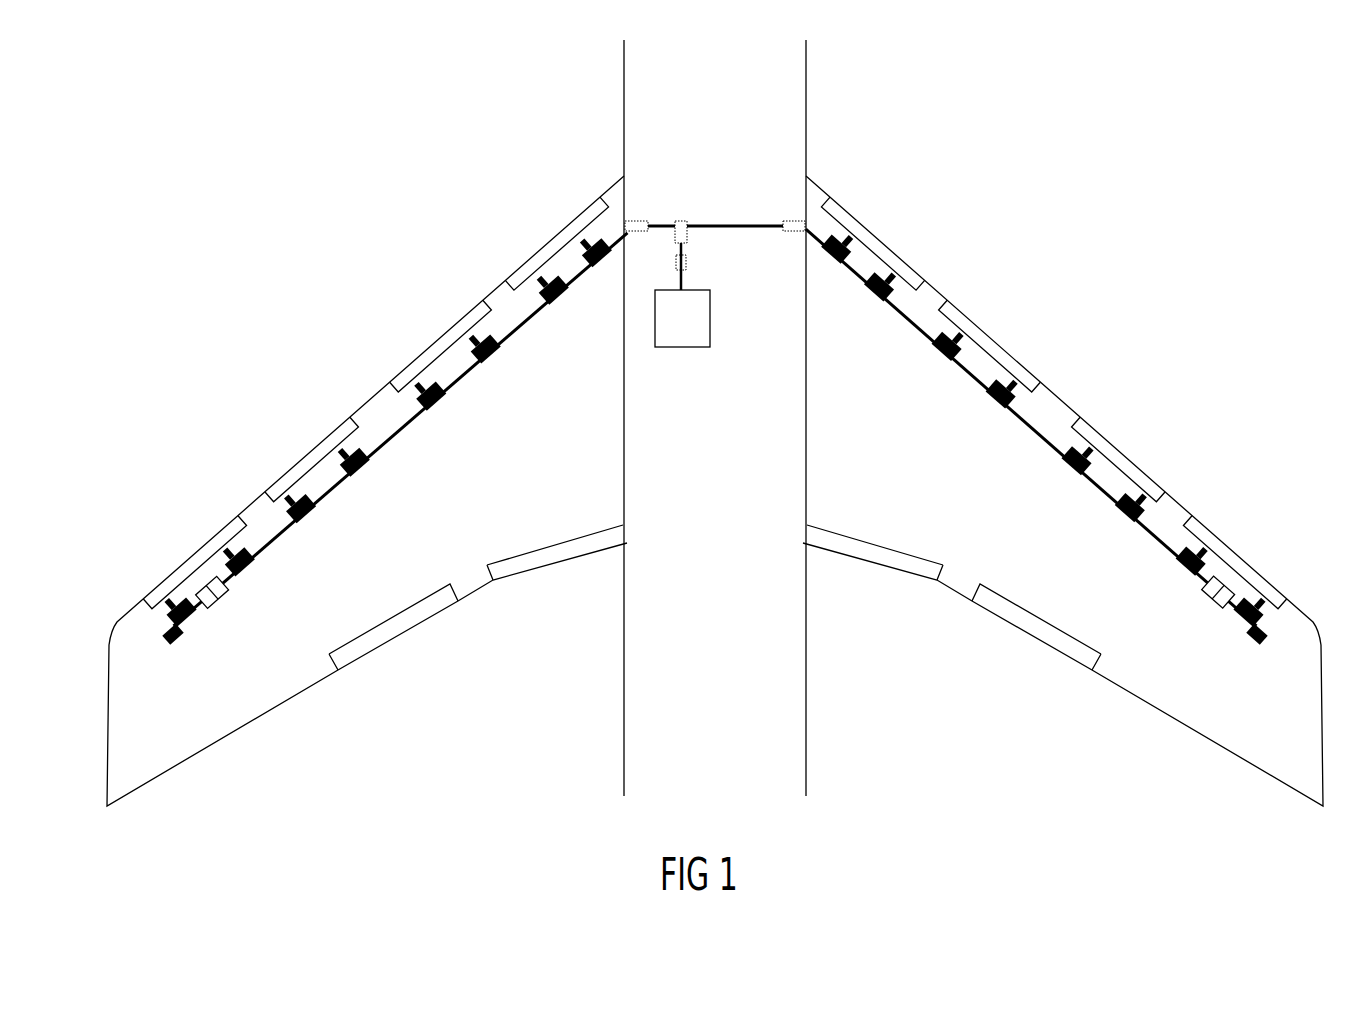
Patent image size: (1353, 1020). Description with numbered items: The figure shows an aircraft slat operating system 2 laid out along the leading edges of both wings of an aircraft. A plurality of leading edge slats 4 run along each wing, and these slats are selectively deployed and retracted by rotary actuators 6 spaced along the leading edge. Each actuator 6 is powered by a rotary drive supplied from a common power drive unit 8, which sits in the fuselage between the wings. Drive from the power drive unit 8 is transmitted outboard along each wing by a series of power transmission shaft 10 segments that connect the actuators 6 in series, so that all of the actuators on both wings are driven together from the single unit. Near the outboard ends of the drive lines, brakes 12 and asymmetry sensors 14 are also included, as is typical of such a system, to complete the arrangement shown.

The aircraft slat operating system 2 is at (1081, 393).
The leading edge slats 4 is at (552, 234).
The rotary actuators 6 is at (602, 260).
The power drive unit 8 is at (710, 347).
The power transmission shaft 10 is at (723, 225).
The brakes 12 is at (214, 608).
The asymmetry sensors 14 is at (178, 637).